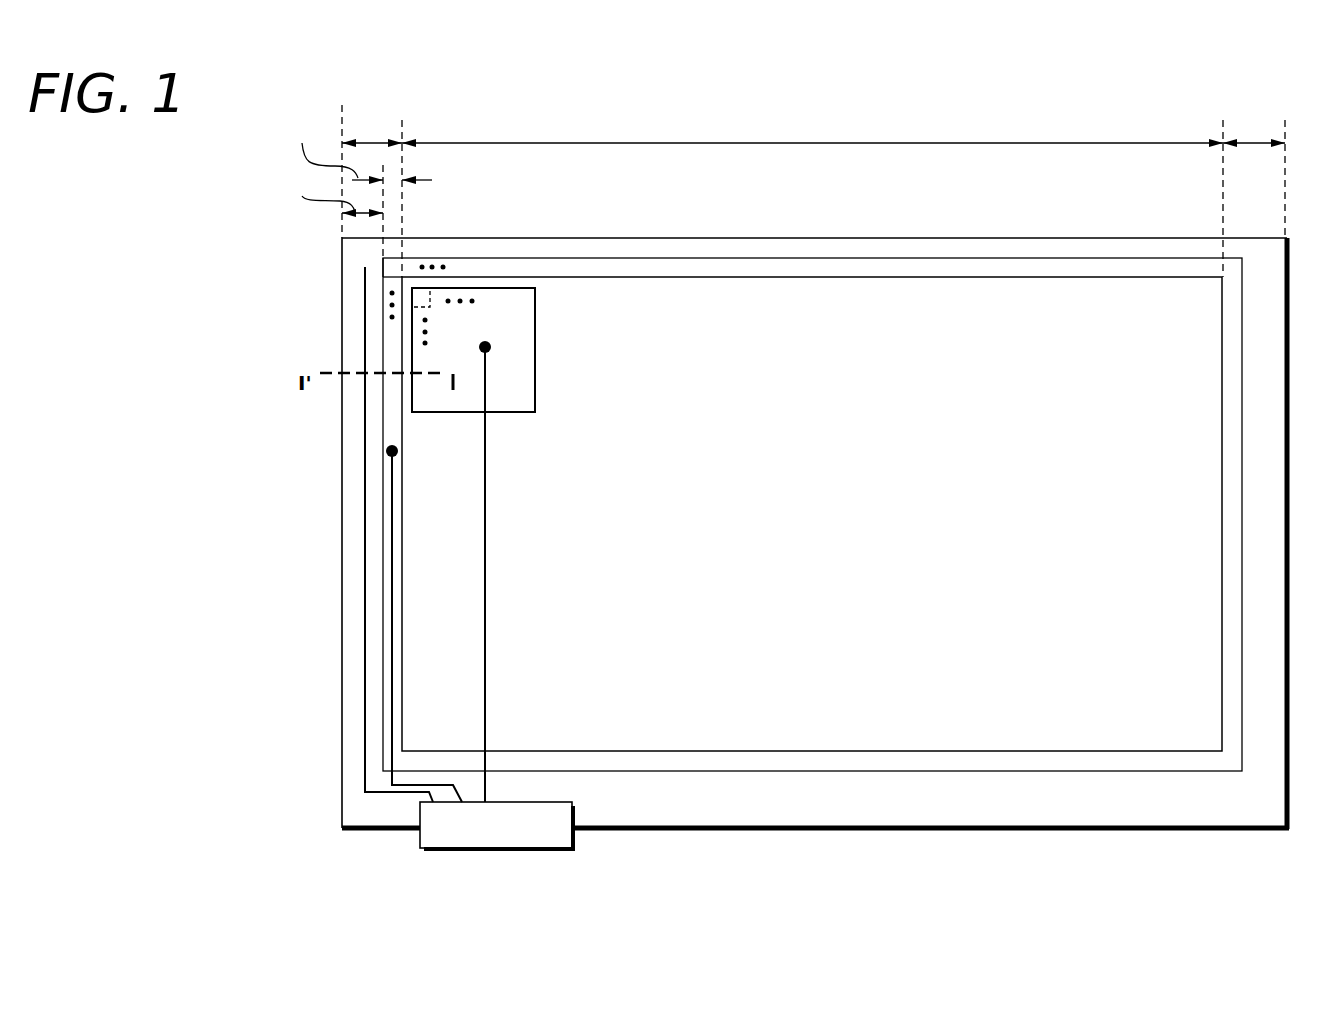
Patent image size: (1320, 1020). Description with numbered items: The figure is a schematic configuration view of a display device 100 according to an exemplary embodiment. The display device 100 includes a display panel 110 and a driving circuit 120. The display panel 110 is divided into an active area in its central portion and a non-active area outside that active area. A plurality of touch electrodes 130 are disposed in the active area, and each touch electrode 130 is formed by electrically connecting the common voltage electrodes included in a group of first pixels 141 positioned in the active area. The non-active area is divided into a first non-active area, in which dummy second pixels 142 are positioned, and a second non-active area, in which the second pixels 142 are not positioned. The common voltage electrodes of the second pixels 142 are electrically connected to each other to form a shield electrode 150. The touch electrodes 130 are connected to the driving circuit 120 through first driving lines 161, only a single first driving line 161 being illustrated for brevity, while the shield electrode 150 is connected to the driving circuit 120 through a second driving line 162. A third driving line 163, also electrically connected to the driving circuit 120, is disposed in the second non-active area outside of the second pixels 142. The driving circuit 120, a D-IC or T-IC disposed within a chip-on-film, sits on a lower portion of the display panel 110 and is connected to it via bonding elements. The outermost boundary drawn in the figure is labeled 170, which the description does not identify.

The display device 100 is at (308, 90).
The display panel 110 is at (737, 735).
The driving circuit 120 is at (551, 855).
The touch electrode 130 is at (425, 401).
The first pixel 141 is at (422, 300).
The second pixel 142 is at (392, 267).
The shield electrode 150 is at (673, 758).
The first driving line 161 is at (485, 633).
The second driving line 162 is at (392, 550).
The third driving line 163 is at (363, 485).
The cover substrate 170 is at (1210, 832).